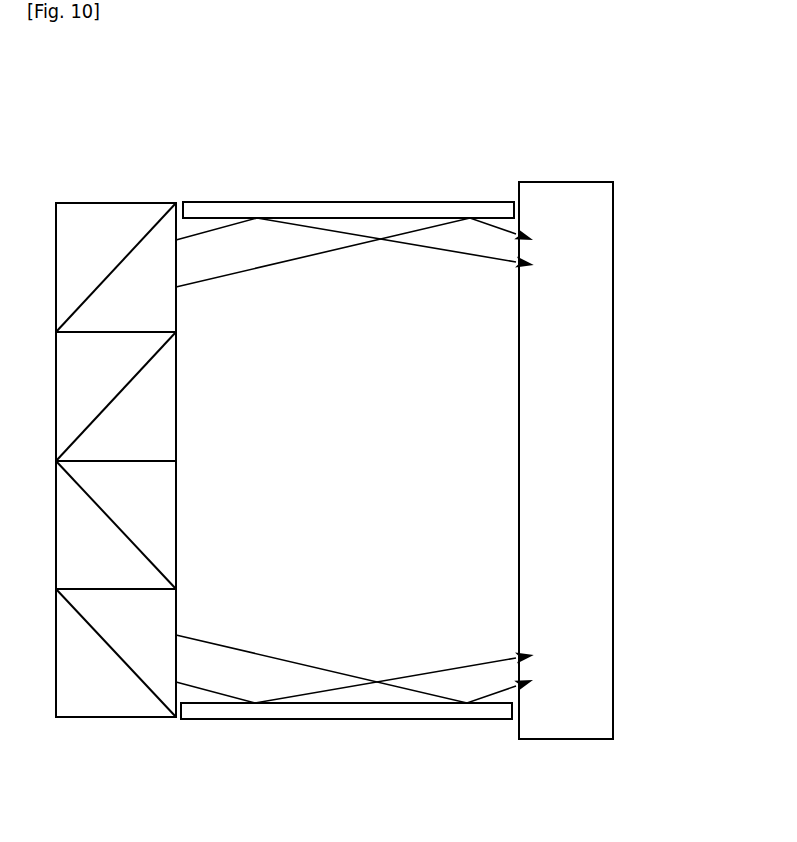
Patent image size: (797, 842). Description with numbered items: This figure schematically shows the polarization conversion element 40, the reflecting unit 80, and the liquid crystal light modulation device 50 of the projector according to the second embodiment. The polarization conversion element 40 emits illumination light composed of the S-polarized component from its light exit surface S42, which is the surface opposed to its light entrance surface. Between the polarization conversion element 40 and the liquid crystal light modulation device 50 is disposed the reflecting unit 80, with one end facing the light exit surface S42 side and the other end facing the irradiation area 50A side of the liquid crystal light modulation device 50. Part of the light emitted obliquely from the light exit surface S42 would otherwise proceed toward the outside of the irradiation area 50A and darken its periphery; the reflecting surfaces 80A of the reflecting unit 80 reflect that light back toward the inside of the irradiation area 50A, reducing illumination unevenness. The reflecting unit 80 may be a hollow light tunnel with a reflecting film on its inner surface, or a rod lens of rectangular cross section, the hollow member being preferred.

The polarization conversion element 40 is at (107, 168).
The liquid crystal light modulation device 50 is at (622, 366).
The irradiation area 50A is at (518, 332).
The reflecting unit 80 is at (384, 210).
The reflecting surface 80A is at (344, 218).
The light exit surface S42 is at (178, 308).